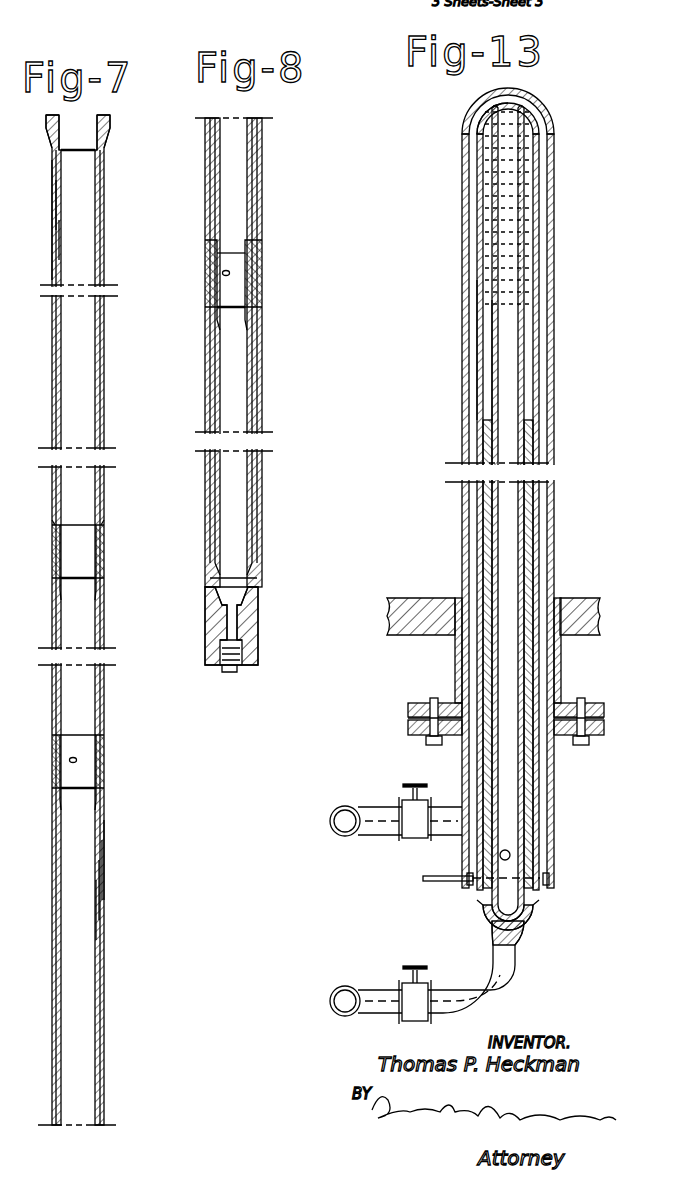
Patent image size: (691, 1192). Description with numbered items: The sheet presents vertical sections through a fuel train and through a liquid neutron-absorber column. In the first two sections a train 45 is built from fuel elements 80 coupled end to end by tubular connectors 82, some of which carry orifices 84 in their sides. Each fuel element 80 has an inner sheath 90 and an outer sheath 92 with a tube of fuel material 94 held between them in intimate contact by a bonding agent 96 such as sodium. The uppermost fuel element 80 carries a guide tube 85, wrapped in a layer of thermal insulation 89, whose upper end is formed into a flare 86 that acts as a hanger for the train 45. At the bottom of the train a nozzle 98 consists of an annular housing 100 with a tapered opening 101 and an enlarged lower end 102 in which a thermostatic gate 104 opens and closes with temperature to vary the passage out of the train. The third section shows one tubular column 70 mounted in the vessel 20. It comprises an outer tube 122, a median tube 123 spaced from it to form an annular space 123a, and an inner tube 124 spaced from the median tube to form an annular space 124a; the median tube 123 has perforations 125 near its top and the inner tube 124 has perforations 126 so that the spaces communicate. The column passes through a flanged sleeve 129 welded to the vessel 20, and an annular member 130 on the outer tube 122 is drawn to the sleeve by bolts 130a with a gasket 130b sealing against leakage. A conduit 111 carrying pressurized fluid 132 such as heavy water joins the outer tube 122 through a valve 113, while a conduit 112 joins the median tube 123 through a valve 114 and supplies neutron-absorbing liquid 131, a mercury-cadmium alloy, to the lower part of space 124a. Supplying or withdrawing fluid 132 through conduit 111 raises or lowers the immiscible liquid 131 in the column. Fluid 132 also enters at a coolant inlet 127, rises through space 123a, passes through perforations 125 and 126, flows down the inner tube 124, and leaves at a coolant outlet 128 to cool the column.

In FIG. 13, the vessel 20 is at (410, 608).
In FIG. 7, the train 45 is at (106, 185).
In FIG. 13, the tubular column 70 is at (502, 503).
In FIG. 7, the fuel element 80 is at (52, 630).
In FIG. 8, the fuel element 80 is at (264, 388).
In FIG. 7, the tubular connector 82 is at (52, 543).
In FIG. 8, the tubular connector 82 is at (208, 268).
In FIG. 7, the orifice 84 is at (77, 760).
In FIG. 8, the orifice 84 is at (230, 273).
In FIG. 7, the guide tube 85 is at (59, 242).
In FIG. 7, the flare 86 is at (50, 139).
In FIG. 7, the layer of thermal insulation 89 is at (54, 204).
In FIG. 7, the inner sheath 90 is at (103, 843).
In FIG. 8, the inner sheath 90 is at (262, 132).
In FIG. 7, the outer sheath 92 is at (98, 893).
In FIG. 8, the outer sheath 92 is at (259, 154).
In FIG. 7, the tube of fuel material 94 is at (96, 916).
In FIG. 8, the tube of fuel material 94 is at (255, 175).
In FIG. 7, the bonding agent 96 is at (100, 869).
In FIG. 8, the bonding agent 96 is at (251, 196).
In FIG. 8, the nozzle 98 is at (205, 629).
In FIG. 8, the annular housing 100 is at (250, 618).
In FIG. 8, the tapered opening 101 is at (247, 580).
In FIG. 8, the enlarged lower end 102 is at (212, 652).
In FIG. 8, the thermostatic gate 104 is at (232, 673).
In FIG. 13, the conduit 111 is at (388, 826).
In FIG. 13, the conduit 112 is at (372, 996).
In FIG. 13, the valve 113 is at (416, 838).
In FIG. 13, the valve 114 is at (418, 990).
In FIG. 13, the outer tube 122 is at (464, 321).
In FIG. 13, the median tube 123 is at (481, 372).
In FIG. 13, the annular space 123a is at (477, 346).
In FIG. 13, the inner tube 124 is at (494, 414).
In FIG. 13, the annular space 124a is at (489, 396).
In FIG. 13, the perforations 125 is at (479, 134).
In FIG. 13, the perforations 126 is at (492, 108).
In FIG. 13, the coolant inlet 127 is at (446, 882).
In FIG. 13, the coolant outlet 128 is at (511, 855).
In FIG. 13, the flanged sleeve 129 is at (458, 672).
In FIG. 13, the annular member 130 is at (450, 737).
In FIG. 13, the bolts 130a is at (432, 742).
In FIG. 13, the gasket 130b is at (432, 718).
In FIG. 13, the neutron-absorbing liquid 131 is at (488, 518).
In FIG. 13, the pressurized fluid 132 is at (508, 215).